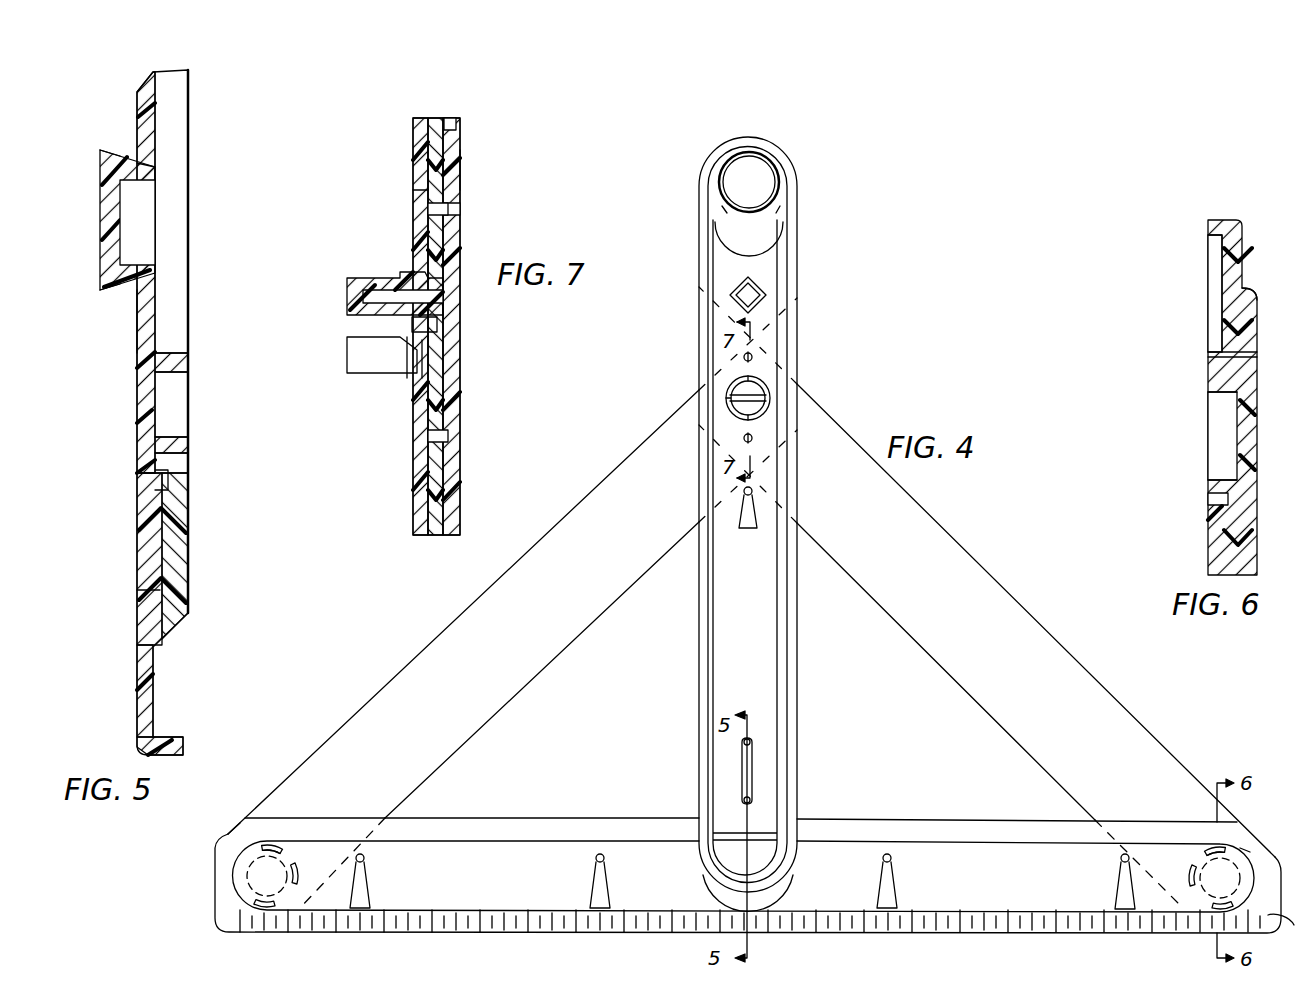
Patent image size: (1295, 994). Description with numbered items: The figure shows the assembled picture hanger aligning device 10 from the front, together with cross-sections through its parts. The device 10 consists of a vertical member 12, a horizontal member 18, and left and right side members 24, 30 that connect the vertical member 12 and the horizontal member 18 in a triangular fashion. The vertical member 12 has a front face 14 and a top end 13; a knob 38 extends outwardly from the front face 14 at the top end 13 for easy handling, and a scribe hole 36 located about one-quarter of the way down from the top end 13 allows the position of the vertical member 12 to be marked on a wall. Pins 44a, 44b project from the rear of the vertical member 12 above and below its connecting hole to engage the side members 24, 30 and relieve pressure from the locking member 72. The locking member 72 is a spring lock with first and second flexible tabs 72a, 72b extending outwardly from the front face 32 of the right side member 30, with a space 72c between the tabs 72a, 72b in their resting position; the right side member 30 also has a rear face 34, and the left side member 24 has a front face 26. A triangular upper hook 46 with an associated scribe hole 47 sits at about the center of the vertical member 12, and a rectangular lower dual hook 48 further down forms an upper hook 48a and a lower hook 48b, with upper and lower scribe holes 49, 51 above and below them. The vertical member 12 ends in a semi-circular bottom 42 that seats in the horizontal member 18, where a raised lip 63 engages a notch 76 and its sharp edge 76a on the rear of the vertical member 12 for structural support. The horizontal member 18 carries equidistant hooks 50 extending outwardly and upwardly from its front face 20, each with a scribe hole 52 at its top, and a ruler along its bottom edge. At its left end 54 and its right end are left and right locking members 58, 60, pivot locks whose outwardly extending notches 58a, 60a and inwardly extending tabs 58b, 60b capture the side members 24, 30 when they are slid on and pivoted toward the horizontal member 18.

In FIG. 4, the picture hanger aligning device 10 is at (803, 264).
In FIG. 4, the vertical member 12 is at (797, 186).
In FIG. 7, the vertical member 12 is at (418, 326).
In FIG. 4, the top end 13 is at (757, 140).
In FIG. 4, the front face 14 is at (766, 318).
In FIG. 7, the front face 14 is at (420, 178).
In FIG. 4, the horizontal member 18 is at (880, 934).
In FIG. 5, the horizontal member 18 is at (182, 748).
In FIG. 6, the horizontal member 18 is at (1257, 335).
In FIG. 4, the front face 20 is at (789, 895).
In FIG. 4, the left side member 24 is at (441, 634).
In FIG. 7, the left side member 24 is at (448, 124).
In FIG. 4, the front face 26 is at (371, 742).
In FIG. 4, the right side member 30 is at (978, 560).
In FIG. 6, the right side member 30 is at (1210, 330).
In FIG. 7, the right side member 30 is at (458, 178).
In FIG. 4, the front face 32 is at (1097, 713).
In FIG. 7, the rear face 34 is at (460, 210).
In FIG. 4, the scribe hole 36 is at (748, 285).
In FIG. 4, the knob 38 is at (745, 165).
In FIG. 4, the semi-circular bottom 42 is at (709, 873).
In FIG. 5, the semi-circular bottom 42 is at (140, 550).
In FIG. 7, the pin 44a is at (428, 208).
In FIG. 7, the pin 44b is at (428, 436).
In FIG. 4, the triangular upper hook 46 is at (750, 528).
In FIG. 4, the scribe hole 47 is at (752, 491).
In FIG. 4, the rectangular lower dual hook 48 is at (752, 770).
In FIG. 5, the rectangular lower dual hook 48 is at (100, 205).
In FIG. 5, the upper hook 48a is at (100, 155).
In FIG. 5, the lower hook 48b is at (103, 292).
In FIG. 4, the upper scribe hole 49 is at (752, 742).
In FIG. 5, the upper scribe hole 49 is at (150, 140).
In FIG. 4, the hooks 50 is at (889, 880).
In FIG. 4, the lower scribe hole 51 is at (752, 800).
In FIG. 5, the lower scribe hole 51 is at (145, 312).
In FIG. 4, the scribe holes 52 is at (891, 858).
In FIG. 4, the left end 54 is at (222, 893).
In FIG. 4, the left locking member 58 is at (278, 876).
In FIG. 4, the outwardly extending notch 58a is at (297, 856).
In FIG. 4, the inwardly extending tab 58b is at (232, 836).
In FIG. 4, the right locking member 60 is at (1248, 878).
In FIG. 6, the right locking member 60 is at (1250, 450).
In FIG. 4, the outwardly extending notch 60a is at (1217, 855).
In FIG. 4, the inwardly extending tab 60b is at (1243, 852).
In FIG. 5, the raised lip 63 is at (165, 555).
In FIG. 4, the locking member 72 is at (770, 398).
In FIG. 4, the first flexible tab 72a is at (768, 390).
In FIG. 7, the first flexible tab 72a is at (350, 275).
In FIG. 4, the second flexible tab 72b is at (770, 408).
In FIG. 7, the second flexible tab 72b is at (348, 370).
In FIG. 4, the space 72c is at (730, 398).
In FIG. 7, the space 72c is at (360, 325).
In FIG. 5, the notch 76 is at (150, 530).
In FIG. 5, the sharp edge 76a is at (150, 590).